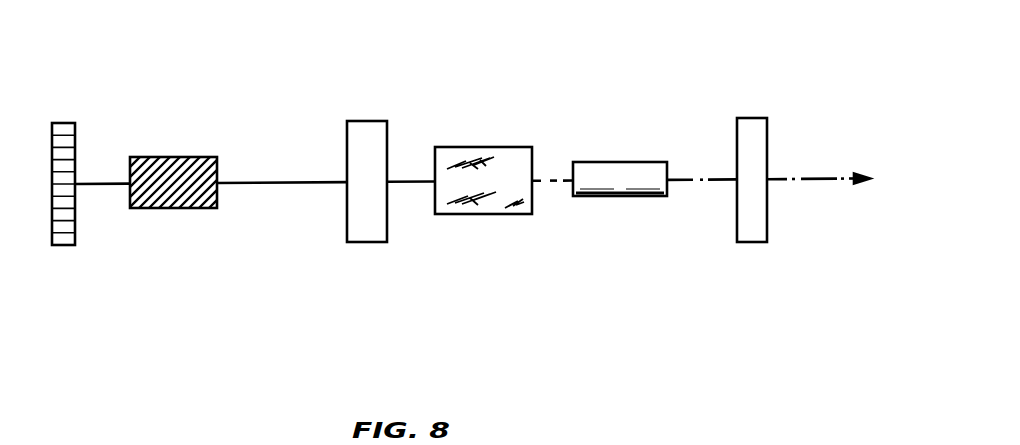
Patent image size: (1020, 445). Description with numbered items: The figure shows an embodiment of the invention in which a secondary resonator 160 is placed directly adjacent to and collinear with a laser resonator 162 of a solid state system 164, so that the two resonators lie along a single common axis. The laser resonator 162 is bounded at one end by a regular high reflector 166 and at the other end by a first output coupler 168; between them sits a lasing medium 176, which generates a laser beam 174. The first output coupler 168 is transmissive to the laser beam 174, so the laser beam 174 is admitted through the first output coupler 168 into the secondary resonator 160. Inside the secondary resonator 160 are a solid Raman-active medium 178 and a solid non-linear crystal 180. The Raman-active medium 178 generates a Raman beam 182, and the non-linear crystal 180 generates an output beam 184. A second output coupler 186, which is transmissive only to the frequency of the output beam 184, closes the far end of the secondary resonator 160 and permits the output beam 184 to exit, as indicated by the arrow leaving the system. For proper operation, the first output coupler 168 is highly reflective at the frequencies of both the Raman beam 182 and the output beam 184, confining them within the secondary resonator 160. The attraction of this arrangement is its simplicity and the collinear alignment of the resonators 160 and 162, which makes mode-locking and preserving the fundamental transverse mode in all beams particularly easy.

The secondary resonator 160 is at (554, 295).
The laser resonator 162 is at (184, 311).
The solid state system 164 is at (333, 47).
The high reflector 166 is at (66, 123).
The first output coupler 168 is at (355, 243).
The laser beam 174 is at (300, 182).
The lasing medium 176 is at (173, 209).
The solid Raman-active medium 178 is at (487, 147).
The solid non-linear crystal 180 is at (642, 197).
The Raman beam 182 is at (553, 179).
The output beam 184 is at (710, 180).
The second output coupler 186 is at (750, 118).